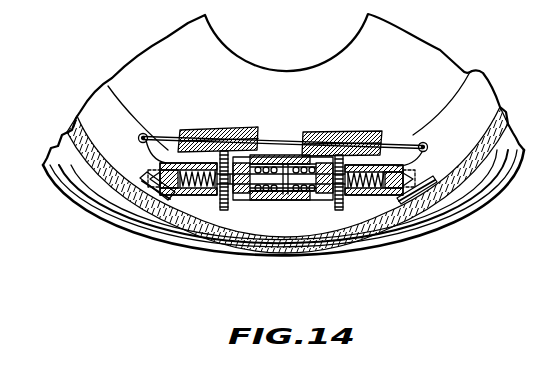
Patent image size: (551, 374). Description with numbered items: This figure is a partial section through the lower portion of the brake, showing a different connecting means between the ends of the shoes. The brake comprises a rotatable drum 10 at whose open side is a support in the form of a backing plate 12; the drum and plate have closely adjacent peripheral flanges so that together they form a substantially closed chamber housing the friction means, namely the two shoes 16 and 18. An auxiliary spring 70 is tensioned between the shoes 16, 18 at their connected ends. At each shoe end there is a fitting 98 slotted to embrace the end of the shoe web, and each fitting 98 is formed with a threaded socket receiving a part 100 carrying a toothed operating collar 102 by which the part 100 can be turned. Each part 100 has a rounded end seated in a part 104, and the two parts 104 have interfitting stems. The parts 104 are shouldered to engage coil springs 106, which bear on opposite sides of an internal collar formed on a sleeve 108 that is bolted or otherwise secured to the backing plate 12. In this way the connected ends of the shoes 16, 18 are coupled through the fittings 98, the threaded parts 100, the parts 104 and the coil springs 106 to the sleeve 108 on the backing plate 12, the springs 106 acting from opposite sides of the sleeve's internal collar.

The rotatable drum 10 is at (93, 170).
The backing plate 12 is at (233, 80).
The shoe 16 is at (114, 113).
The shoe 18 is at (467, 110).
The auxiliary spring 70 is at (191, 130).
The fitting 98 is at (157, 196).
The threaded part 100 is at (188, 212).
The toothed operating collar 102 is at (213, 200).
The part with interfitting stem 104 is at (243, 200).
The coil spring 106 is at (291, 200).
The sleeve 108 is at (272, 150).